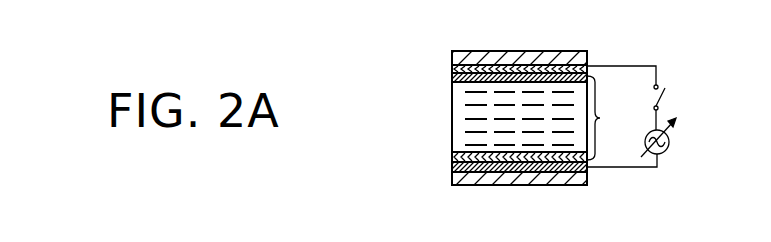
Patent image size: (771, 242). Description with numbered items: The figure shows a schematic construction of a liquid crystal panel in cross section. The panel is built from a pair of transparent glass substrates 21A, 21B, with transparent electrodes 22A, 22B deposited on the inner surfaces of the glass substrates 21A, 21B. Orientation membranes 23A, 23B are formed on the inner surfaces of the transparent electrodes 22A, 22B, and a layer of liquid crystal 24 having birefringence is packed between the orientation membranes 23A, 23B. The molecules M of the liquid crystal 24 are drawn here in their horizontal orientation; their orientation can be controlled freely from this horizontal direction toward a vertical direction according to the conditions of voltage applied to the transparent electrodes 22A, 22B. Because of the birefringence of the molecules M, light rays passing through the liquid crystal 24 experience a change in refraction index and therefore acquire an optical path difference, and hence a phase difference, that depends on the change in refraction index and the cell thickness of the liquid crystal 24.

The transparent glass substrate 21A is at (452, 58).
The transparent electrode 22A is at (452, 69).
The orientation membrane 23A is at (452, 78).
The molecules M is at (475, 118).
The orientation membrane 23B is at (452, 158).
The transparent electrode 22B is at (452, 167).
The transparent glass substrate 21B is at (452, 178).
The liquid crystal 24 is at (631, 116).